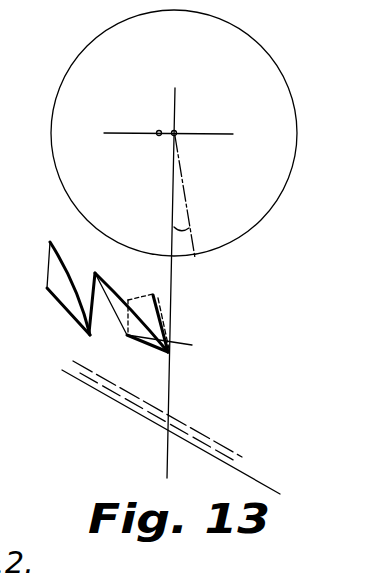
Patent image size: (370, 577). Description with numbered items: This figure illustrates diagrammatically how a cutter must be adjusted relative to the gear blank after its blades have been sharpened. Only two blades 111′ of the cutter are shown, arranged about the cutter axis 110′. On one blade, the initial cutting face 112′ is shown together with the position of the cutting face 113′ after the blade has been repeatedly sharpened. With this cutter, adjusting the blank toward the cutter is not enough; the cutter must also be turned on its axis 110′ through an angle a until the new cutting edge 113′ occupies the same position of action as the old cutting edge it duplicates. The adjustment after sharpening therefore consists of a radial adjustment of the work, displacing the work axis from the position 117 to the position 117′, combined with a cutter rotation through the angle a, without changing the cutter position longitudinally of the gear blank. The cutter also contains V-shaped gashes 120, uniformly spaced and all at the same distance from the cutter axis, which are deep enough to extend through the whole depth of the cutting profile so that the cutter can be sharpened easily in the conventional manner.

The cutter axis 110′ is at (177, 132).
The blades 111′ is at (155, 340).
The initial cutting face 112′ is at (169, 326).
The cutting face after sharpening 113′ is at (150, 293).
The work axis position 117 is at (228, 462).
The displaced work axis position 117′ is at (236, 452).
The V-shaped gashes 120 is at (105, 307).
The angle of cutter rotation a is at (189, 228).